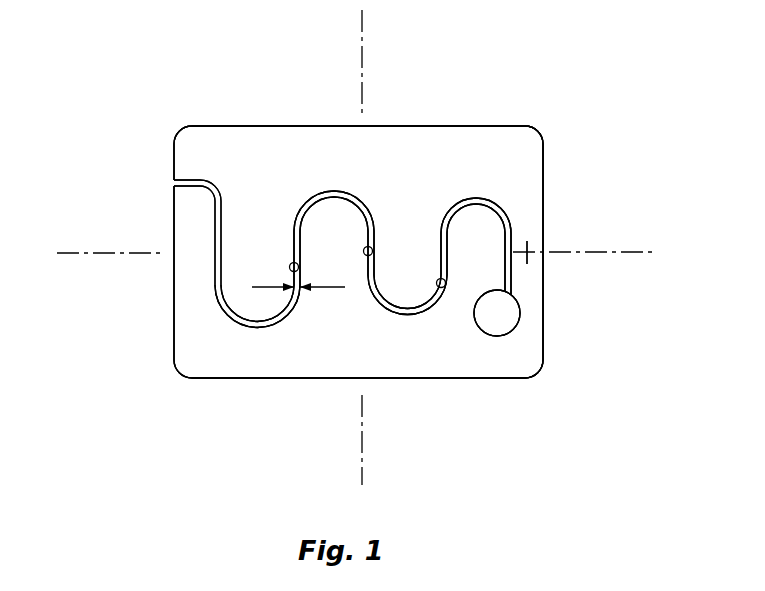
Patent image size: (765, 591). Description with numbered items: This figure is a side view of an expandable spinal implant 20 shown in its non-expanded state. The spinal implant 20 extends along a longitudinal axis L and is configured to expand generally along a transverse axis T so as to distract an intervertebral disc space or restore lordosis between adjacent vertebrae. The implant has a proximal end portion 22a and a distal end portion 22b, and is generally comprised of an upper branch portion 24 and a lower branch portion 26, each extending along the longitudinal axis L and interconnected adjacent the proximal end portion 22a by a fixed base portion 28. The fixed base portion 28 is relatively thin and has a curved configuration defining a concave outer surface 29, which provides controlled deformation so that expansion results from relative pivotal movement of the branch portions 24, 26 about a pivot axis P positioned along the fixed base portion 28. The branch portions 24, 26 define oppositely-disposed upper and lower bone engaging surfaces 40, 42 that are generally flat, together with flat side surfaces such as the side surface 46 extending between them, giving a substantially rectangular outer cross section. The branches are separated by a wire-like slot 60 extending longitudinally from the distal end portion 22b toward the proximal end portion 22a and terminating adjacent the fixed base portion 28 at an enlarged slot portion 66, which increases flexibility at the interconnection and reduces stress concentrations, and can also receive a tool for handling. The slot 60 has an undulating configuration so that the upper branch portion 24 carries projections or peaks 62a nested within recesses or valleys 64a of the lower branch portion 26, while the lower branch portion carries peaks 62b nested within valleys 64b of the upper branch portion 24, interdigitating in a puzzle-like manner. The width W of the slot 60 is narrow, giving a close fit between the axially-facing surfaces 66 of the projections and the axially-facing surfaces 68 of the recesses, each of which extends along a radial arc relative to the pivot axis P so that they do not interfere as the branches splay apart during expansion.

The expandable spinal implant 20 is at (277, 80).
The proximal end portion 22a is at (578, 132).
The distal end portion 22b is at (145, 318).
The upper branch portion 24 is at (480, 100).
The lower branch portion 26 is at (285, 393).
The fixed base portion 28 is at (543, 293).
The concave outer surface 29 is at (550, 202).
The upper bone engaging surface 40 is at (318, 127).
The lower bone engaging surface 42 is at (433, 380).
The side surface 46 is at (463, 166).
The slot 60 is at (285, 160).
The projections or peaks 62a is at (222, 305).
The projections or peaks 62b is at (365, 200).
The recesses or valleys 64a is at (253, 322).
The recesses or valleys 64b is at (317, 203).
The enlarged slot portion 66 is at (300, 242).
The axially-facing surfaces 68 is at (300, 270).
The width W is at (298, 267).
The transverse axis T is at (362, 35).
The longitudinal axis L is at (630, 250).
The pivot axis P is at (548, 250).